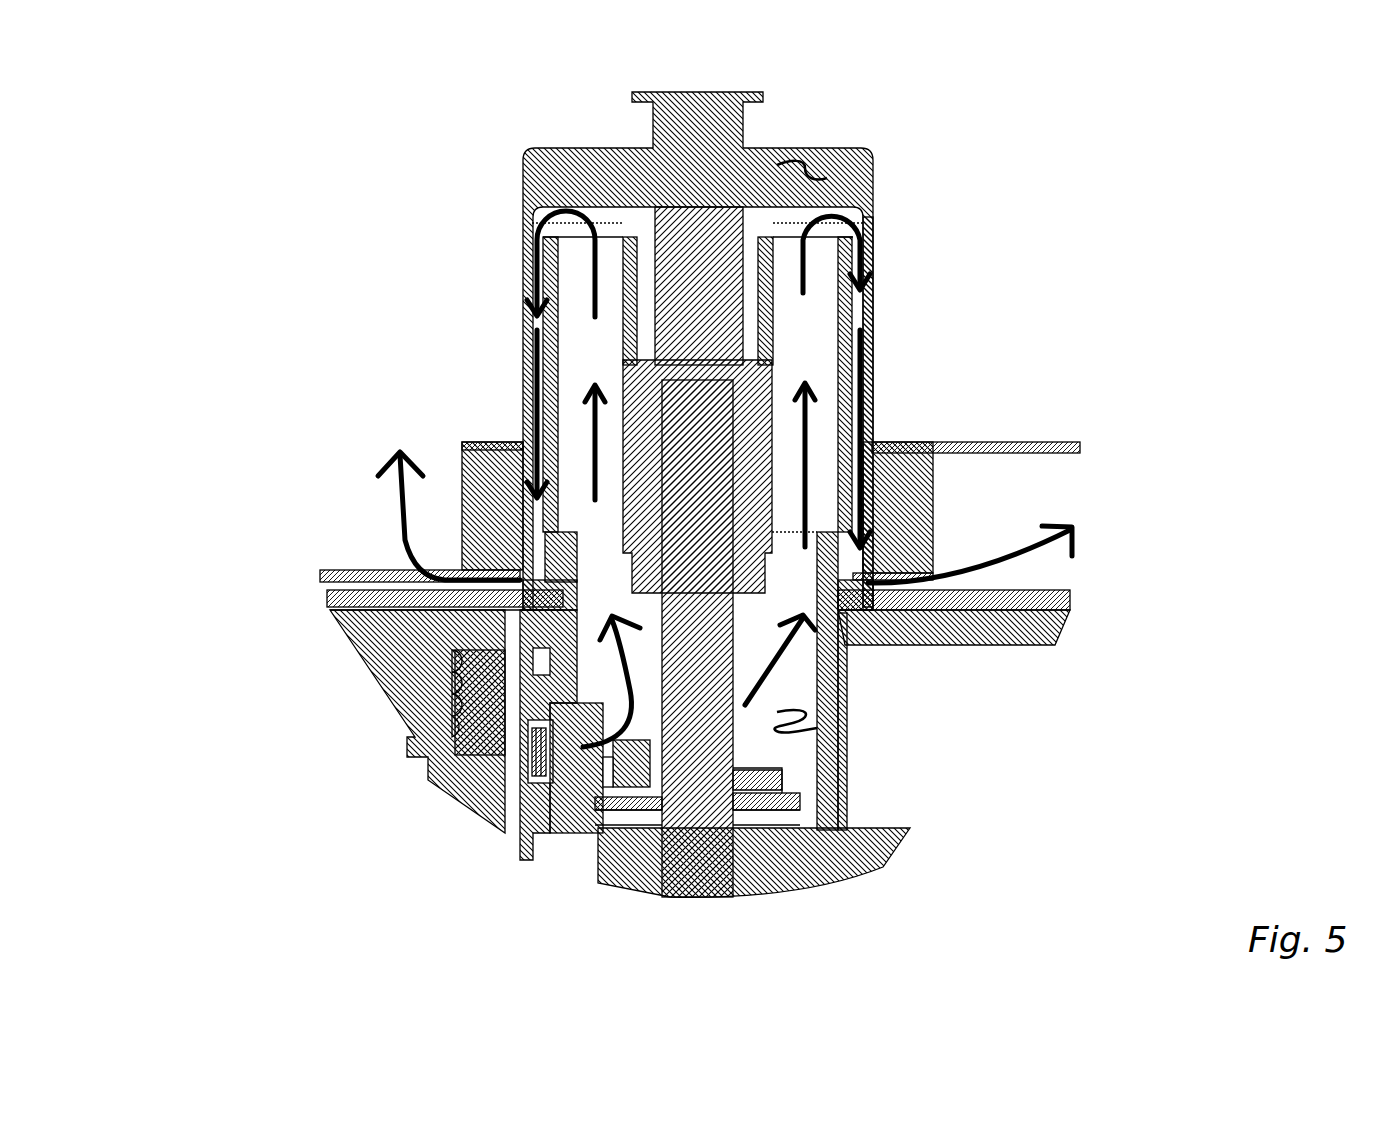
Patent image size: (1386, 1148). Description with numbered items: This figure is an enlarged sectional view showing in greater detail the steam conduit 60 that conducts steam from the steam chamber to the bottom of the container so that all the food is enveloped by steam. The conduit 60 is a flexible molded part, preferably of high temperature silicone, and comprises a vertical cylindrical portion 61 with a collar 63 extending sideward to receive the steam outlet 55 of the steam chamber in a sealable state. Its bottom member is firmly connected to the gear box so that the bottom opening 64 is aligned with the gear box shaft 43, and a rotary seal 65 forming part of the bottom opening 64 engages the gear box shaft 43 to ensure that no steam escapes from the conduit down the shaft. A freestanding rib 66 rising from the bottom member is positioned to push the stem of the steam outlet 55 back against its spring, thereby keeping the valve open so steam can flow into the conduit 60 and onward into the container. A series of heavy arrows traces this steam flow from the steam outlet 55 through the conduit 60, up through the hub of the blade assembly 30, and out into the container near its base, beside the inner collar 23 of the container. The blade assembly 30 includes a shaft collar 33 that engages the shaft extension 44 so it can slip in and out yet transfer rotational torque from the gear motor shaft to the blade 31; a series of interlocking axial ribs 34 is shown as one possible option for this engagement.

The blade assembly 30 is at (810, 150).
The shaft collar 33 is at (630, 263).
The interlocking axial ribs 34 is at (635, 362).
The shaft extension 44 is at (763, 190).
The inner collar 23 is at (873, 365).
The blade 31 is at (347, 568).
The vertical cylindrical portion 61 is at (563, 613).
The collar 63 is at (450, 743).
The steam outlet 55 is at (530, 843).
The freestanding rib 66 is at (533, 840).
The bottom opening 64 is at (840, 780).
The rotary seal 65 is at (725, 770).
The gear box shaft 43 is at (837, 650).
The steam conduit 60 is at (840, 727).